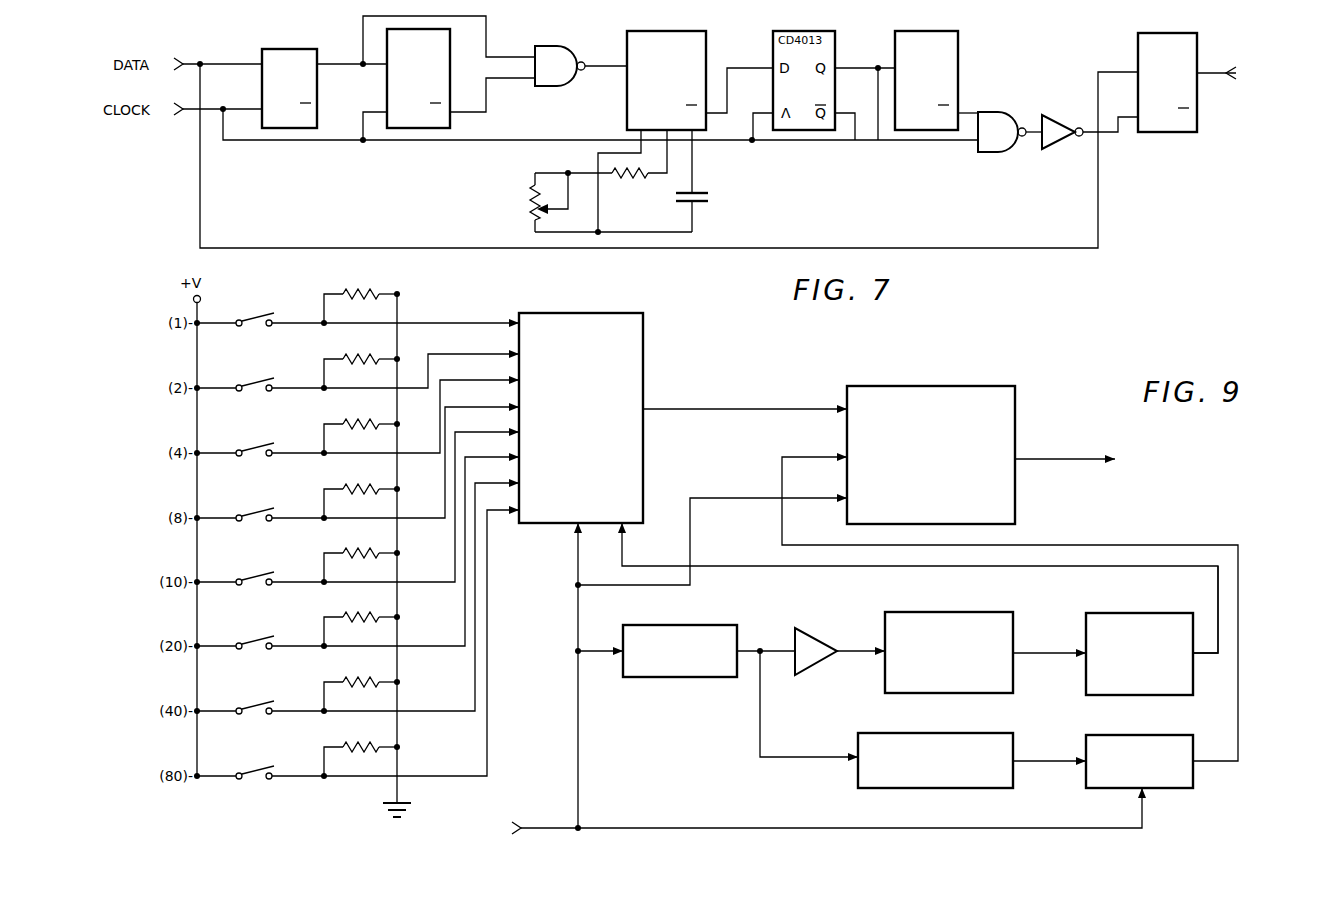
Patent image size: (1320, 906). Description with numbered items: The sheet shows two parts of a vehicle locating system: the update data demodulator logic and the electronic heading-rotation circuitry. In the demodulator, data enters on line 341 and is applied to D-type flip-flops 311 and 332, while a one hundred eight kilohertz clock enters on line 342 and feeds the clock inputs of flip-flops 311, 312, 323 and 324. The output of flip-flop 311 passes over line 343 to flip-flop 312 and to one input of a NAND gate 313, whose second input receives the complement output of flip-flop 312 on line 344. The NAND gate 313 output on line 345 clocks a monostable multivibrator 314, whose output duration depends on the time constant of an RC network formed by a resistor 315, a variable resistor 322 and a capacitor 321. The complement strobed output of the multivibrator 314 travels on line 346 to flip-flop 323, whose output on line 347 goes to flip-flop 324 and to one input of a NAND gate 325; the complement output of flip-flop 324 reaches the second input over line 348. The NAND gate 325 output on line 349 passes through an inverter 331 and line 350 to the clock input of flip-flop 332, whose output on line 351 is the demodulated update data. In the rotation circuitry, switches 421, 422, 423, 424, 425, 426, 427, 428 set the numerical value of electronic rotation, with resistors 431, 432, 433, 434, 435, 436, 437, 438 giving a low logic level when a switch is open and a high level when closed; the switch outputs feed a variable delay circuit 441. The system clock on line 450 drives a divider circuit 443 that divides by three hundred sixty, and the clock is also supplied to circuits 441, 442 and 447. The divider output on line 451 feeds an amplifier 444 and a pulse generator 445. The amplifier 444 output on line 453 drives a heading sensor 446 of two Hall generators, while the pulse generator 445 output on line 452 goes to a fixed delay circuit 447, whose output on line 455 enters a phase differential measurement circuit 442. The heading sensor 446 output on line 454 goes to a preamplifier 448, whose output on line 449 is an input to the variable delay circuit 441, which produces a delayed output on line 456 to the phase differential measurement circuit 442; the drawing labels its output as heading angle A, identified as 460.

In FIG. 7, the D-type flip-flop 311 is at (282, 54).
In FIG. 7, the flip-flop 312 is at (397, 85).
In FIG. 7, the NAND gate 313 is at (547, 60).
In FIG. 7, the monostable multivibrator 314 is at (667, 31).
In FIG. 7, the resistor 315 is at (630, 181).
In FIG. 7, the capacitor 321 is at (708, 195).
In FIG. 7, the variable resistor 322 is at (531, 193).
In FIG. 7, the flip-flop 323 is at (836, 112).
In FIG. 7, the D-type flip-flop 324 is at (959, 66).
In FIG. 7, the NAND gate 325 is at (988, 141).
In FIG. 7, the inverter 331 is at (1053, 128).
In FIG. 7, the D-type flip-flop 332 is at (1173, 126).
In FIG. 7, the data input line 341 is at (224, 62).
In FIG. 7, the clock input line 342 is at (215, 107).
In FIG. 7, the flip-flop output line 343 is at (333, 62).
In FIG. 7, the complement output line 344 is at (487, 112).
In FIG. 7, the NAND gate output line 345 is at (598, 70).
In FIG. 7, the complement strobed output line 346 is at (739, 66).
In FIG. 7, the flip-flop output line 347 is at (857, 66).
In FIG. 7, the complement output line 348 is at (968, 113).
In FIG. 7, the NAND gate output line 349 is at (1030, 134).
In FIG. 7, the inverter output line 350 is at (1108, 135).
In FIG. 7, the demodulated data output line 351 is at (1210, 72).
In FIG. 9, the switch 421 is at (252, 312).
In FIG. 9, the switch 422 is at (252, 377).
In FIG. 9, the switch 423 is at (252, 442).
In FIG. 9, the switch 424 is at (252, 507).
In FIG. 9, the switch 425 is at (252, 571).
In FIG. 9, the switch 426 is at (252, 635).
In FIG. 9, the switch 427 is at (252, 700).
In FIG. 9, the switch 428 is at (252, 765).
In FIG. 9, the resistor 431 is at (358, 292).
In FIG. 9, the resistor 432 is at (362, 355).
In FIG. 9, the resistor 433 is at (362, 420).
In FIG. 9, the resistor 434 is at (362, 485).
In FIG. 9, the resistor 435 is at (362, 549).
In FIG. 9, the resistor 436 is at (362, 613).
In FIG. 9, the resistor 437 is at (362, 678).
In FIG. 9, the resistor 438 is at (362, 743).
In FIG. 9, the variable delay circuit 441 is at (598, 321).
In FIG. 9, the phase differential measurement circuit 442 is at (925, 383).
In FIG. 9, the divider circuit 443 is at (657, 631).
In FIG. 9, the amplifier 444 is at (815, 647).
In FIG. 9, the pulse generator 445 is at (911, 735).
In FIG. 9, the heading sensor 446 is at (927, 617).
In FIG. 9, the fixed delay circuit 447 is at (1160, 741).
In FIG. 9, the preamplifier 448 is at (1117, 620).
In FIG. 9, the preamplifier output line 449 is at (1218, 592).
In FIG. 9, the clock input line 450 is at (531, 824).
In FIG. 9, the divider output line 451 is at (750, 647).
In FIG. 9, the pulse generator output line 452 is at (1034, 757).
In FIG. 9, the amplifier output line 453 is at (853, 656).
In FIG. 9, the heading sensor output line 454 is at (1040, 652).
In FIG. 9, the fixed delay output line 455 is at (1210, 758).
In FIG. 9, the variable delay output line 456 is at (728, 408).
In FIG. 9, the heading angle output 460 is at (1046, 458).